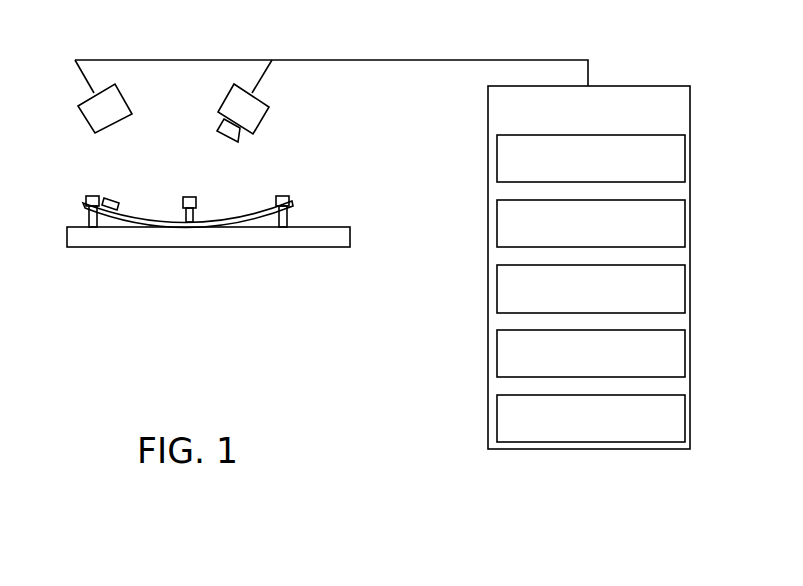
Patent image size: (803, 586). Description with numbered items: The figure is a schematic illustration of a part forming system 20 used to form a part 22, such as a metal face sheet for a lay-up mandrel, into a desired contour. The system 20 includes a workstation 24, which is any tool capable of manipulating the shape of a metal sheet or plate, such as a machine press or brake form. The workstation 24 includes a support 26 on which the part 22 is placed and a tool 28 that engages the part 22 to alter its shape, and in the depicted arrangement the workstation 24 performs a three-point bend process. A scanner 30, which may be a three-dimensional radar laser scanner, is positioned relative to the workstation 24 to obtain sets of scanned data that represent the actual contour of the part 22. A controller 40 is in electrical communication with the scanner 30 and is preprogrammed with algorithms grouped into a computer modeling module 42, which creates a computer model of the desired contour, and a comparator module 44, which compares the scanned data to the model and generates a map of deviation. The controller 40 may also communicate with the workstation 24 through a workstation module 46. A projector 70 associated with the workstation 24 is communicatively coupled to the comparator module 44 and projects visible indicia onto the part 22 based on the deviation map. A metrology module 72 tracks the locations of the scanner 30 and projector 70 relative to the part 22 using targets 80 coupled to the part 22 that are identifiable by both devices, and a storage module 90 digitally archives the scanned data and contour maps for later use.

The system 20 is at (475, 54).
The part 22 is at (256, 210).
The workstation 24 is at (109, 251).
The support 26 is at (259, 238).
The tool 28 is at (197, 203).
The scanner 30 is at (83, 120).
The controller 40 is at (635, 87).
The computer modeling module 42 is at (685, 160).
The comparator module 44 is at (685, 226).
The workstation module 46 is at (685, 291).
The projector 70 is at (265, 117).
The metrology module 72 is at (685, 356).
The target 80 is at (112, 202).
The storage module 90 is at (685, 421).